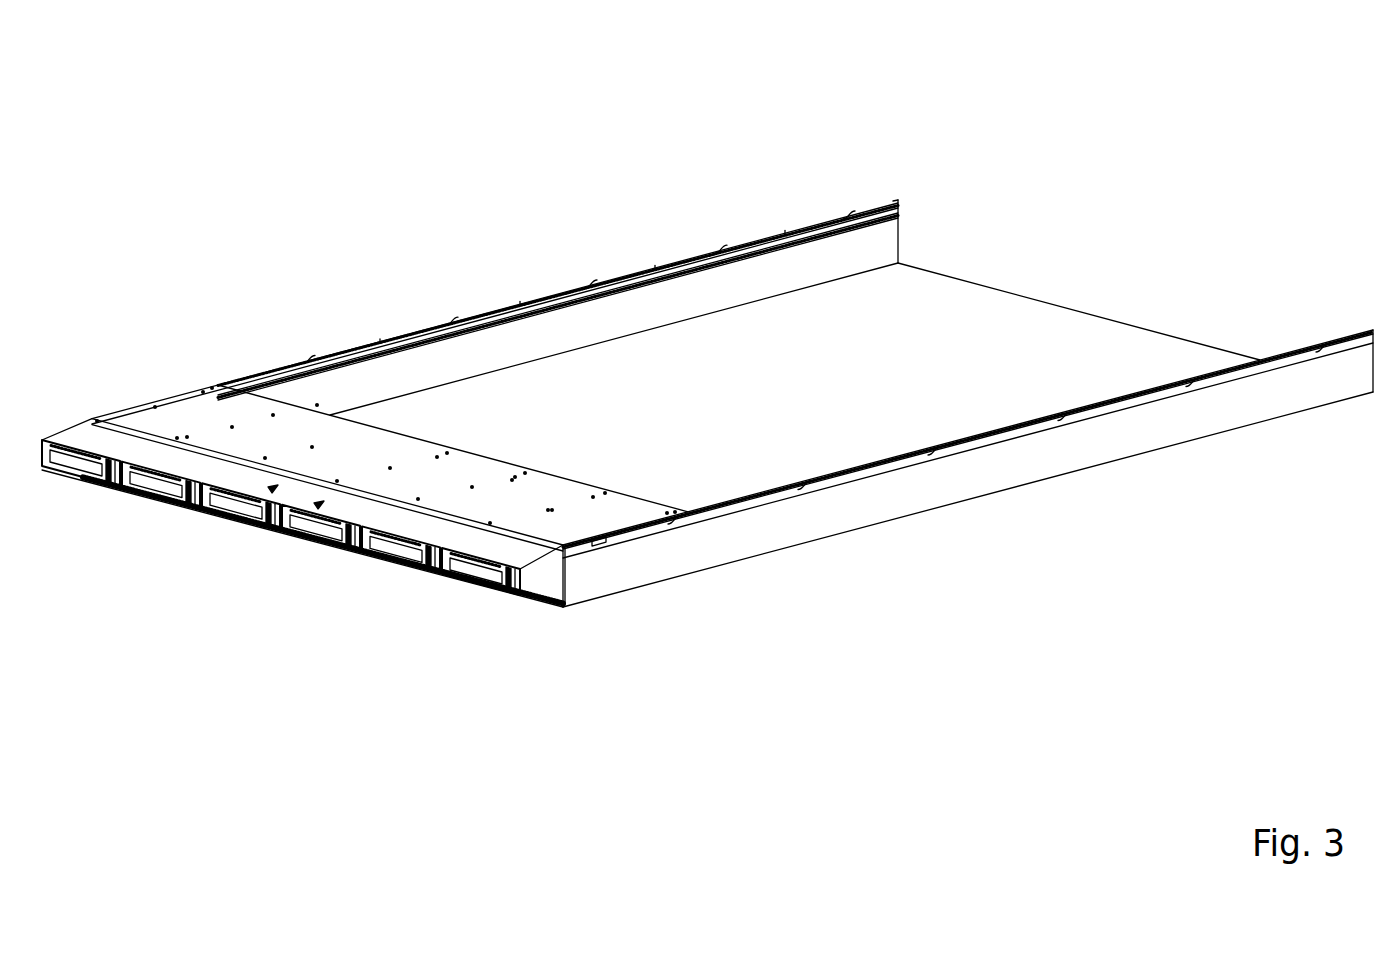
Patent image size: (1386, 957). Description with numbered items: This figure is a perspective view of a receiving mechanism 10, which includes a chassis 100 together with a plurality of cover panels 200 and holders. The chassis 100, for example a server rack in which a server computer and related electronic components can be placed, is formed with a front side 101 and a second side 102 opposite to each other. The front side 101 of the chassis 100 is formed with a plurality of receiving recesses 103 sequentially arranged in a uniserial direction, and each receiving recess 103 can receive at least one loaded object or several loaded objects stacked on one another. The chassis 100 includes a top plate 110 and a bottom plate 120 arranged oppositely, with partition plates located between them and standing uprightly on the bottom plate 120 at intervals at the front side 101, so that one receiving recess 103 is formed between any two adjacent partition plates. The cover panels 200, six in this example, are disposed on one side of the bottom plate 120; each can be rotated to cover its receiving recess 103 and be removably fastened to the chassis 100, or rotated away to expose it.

The receiving mechanism 10 is at (1338, 86).
The chassis 100 is at (905, 199).
The front side 101 is at (548, 606).
The second side 102 is at (1088, 287).
The receiving recesses 103 is at (318, 505).
The top plate 110 is at (168, 407).
The bottom plate 120 is at (543, 593).
The cover panels 200 is at (130, 487).